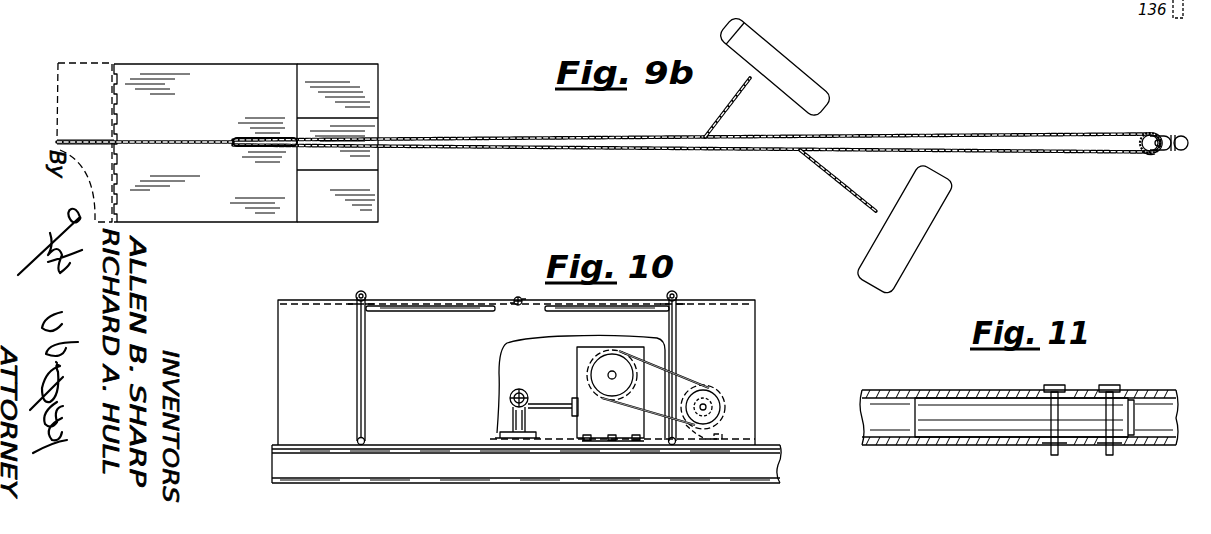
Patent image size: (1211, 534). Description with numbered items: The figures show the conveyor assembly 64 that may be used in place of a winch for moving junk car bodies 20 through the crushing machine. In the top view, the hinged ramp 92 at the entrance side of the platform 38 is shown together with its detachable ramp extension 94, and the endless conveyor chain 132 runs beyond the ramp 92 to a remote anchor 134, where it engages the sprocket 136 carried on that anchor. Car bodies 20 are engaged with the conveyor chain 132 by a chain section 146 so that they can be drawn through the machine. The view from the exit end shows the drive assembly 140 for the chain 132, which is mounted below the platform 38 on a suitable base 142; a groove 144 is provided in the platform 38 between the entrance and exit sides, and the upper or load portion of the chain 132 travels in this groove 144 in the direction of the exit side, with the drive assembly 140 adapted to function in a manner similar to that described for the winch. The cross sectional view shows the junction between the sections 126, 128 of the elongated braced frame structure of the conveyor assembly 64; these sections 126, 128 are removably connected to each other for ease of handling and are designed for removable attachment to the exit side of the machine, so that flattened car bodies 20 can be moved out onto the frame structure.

In FIG. 9b, the junk car bodies 20 is at (800, 70).
In FIG. 10, the platform 38 is at (712, 300).
In FIG. 9b, the conveyor assembly 64 is at (420, 130).
In FIG. 9b, the hinged ramp 92 is at (267, 70).
In FIG. 9b, the detachable ramp extension 94 is at (357, 69).
In FIG. 11, the frame structure section 126 is at (890, 390).
In FIG. 11, the frame structure section 128 is at (1157, 390).
In FIG. 9b, the endless conveyor chain 132 is at (183, 140).
In FIG. 10, the endless conveyor chain 132 is at (517, 300).
In FIG. 9b, the remote anchor 134 is at (1185, 131).
In FIG. 9b, the sprocket 136 is at (1150, 156).
In FIG. 10, the drive assembly 140 is at (710, 366).
In FIG. 10, the base 142 is at (770, 447).
In FIG. 10, the groove 144 is at (513, 306).
In FIG. 9b, the chain section 146 is at (730, 107).